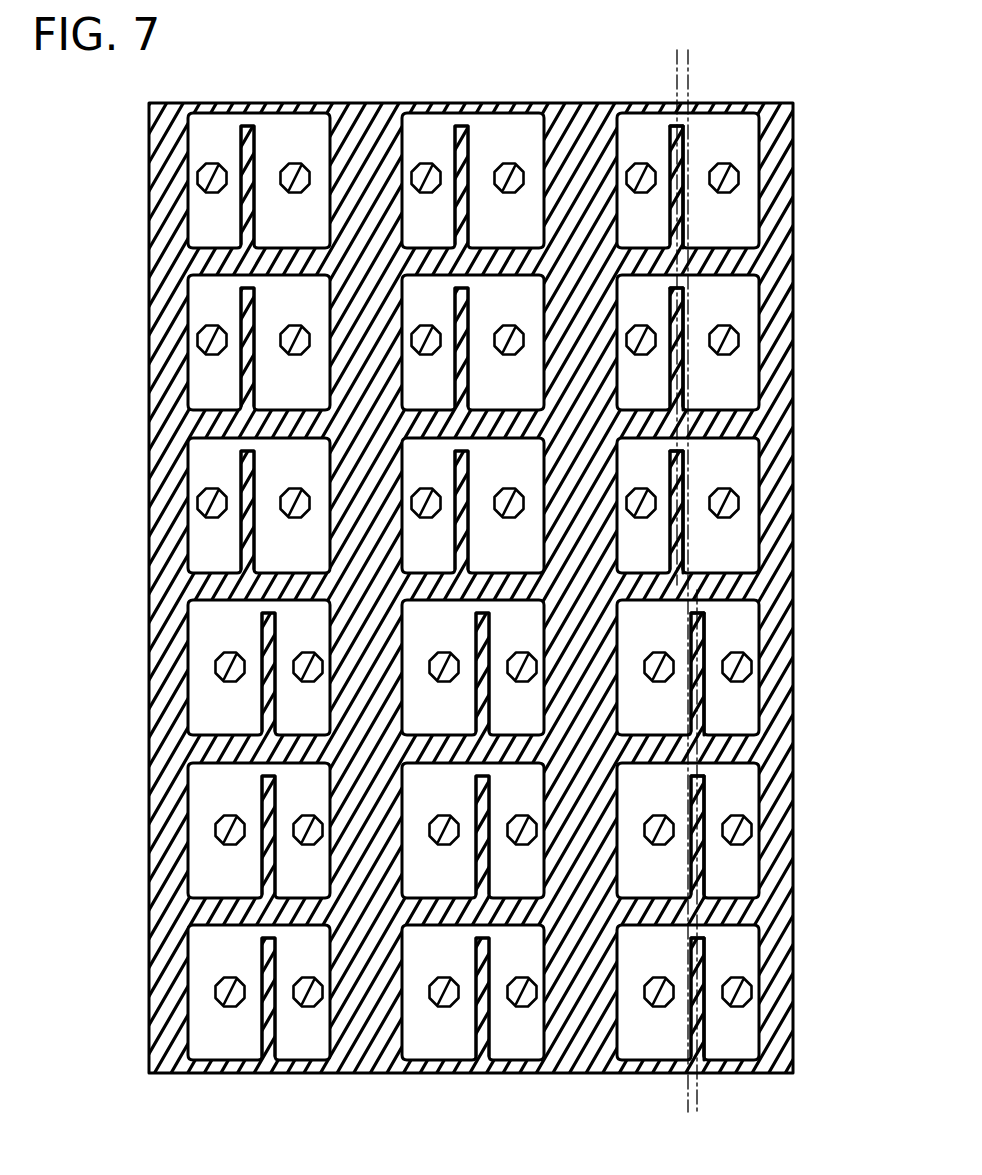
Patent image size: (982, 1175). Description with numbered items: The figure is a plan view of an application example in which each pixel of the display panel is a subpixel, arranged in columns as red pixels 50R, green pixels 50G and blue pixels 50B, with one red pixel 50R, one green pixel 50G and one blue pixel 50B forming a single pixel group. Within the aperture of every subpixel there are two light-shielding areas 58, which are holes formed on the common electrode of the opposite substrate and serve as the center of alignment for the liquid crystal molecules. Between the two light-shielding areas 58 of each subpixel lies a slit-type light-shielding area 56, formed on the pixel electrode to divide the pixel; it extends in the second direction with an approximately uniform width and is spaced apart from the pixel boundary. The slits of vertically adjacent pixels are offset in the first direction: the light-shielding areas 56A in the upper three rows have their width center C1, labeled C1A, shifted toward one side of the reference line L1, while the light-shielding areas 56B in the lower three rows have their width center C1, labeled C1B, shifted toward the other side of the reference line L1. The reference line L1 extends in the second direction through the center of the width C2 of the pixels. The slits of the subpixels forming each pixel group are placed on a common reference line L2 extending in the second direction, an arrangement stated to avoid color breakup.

The red pixel 50R is at (313, 231).
The green pixel 50G is at (313, 390).
The blue pixel 50B is at (313, 556).
The light-shielding area 56 is at (446, 593).
The light-shielding area of pixel 50A 56A is at (241, 215).
The light-shielding area of pixel 50B 56B is at (262, 700).
The light-shielding area 58 is at (212, 164).
The center of the width of the light-shielding area C1 is at (719, 593).
The center of the width of light-shielding area 56A C1A is at (683, 194).
The center of the width of light-shielding area 56B C1B is at (704, 692).
The center of the width of the pixel C2 is at (685, 128).
The reference line L1 is at (690, 75).
The reference line L2 is at (675, 74).